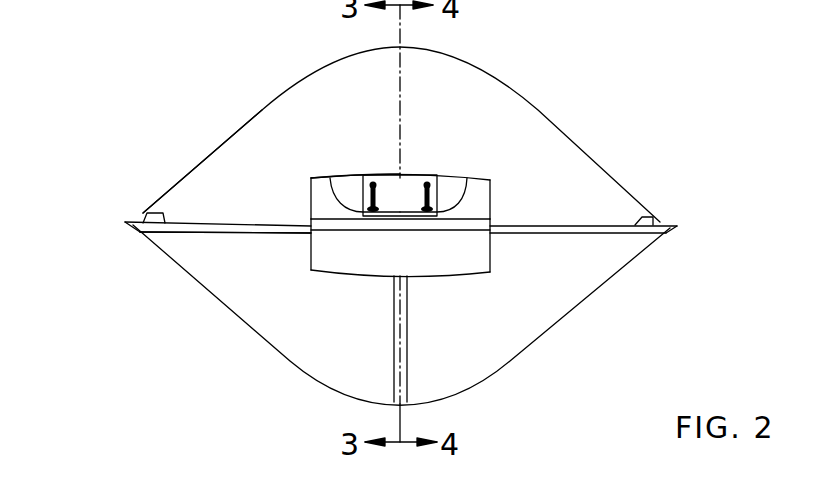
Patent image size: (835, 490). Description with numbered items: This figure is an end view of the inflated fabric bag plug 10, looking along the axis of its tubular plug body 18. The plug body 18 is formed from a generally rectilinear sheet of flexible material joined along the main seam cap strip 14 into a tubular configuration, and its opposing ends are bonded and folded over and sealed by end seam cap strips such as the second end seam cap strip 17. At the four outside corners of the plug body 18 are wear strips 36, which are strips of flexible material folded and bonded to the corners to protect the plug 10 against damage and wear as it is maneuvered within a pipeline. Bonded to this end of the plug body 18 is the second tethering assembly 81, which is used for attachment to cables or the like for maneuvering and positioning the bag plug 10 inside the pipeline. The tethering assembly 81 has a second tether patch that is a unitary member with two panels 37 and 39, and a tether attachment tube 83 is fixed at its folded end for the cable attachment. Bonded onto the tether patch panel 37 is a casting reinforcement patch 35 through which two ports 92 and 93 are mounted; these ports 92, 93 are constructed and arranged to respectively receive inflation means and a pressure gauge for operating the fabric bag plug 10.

The fabric bag plug 10 is at (592, 147).
The main seam cap strip 14 is at (407, 360).
The second end seam cap strip 17 is at (145, 213).
The plug body 18 is at (209, 179).
The casting reinforcement patch 35 is at (394, 190).
The wear strips 36 is at (727, 273).
The tether patch panel 37 is at (485, 203).
The tether patch panel 39 is at (468, 258).
The second tethering assembly 81 is at (290, 172).
The tether attachment tube 83 is at (310, 228).
The port 92 is at (330, 177).
The port 93 is at (466, 178).